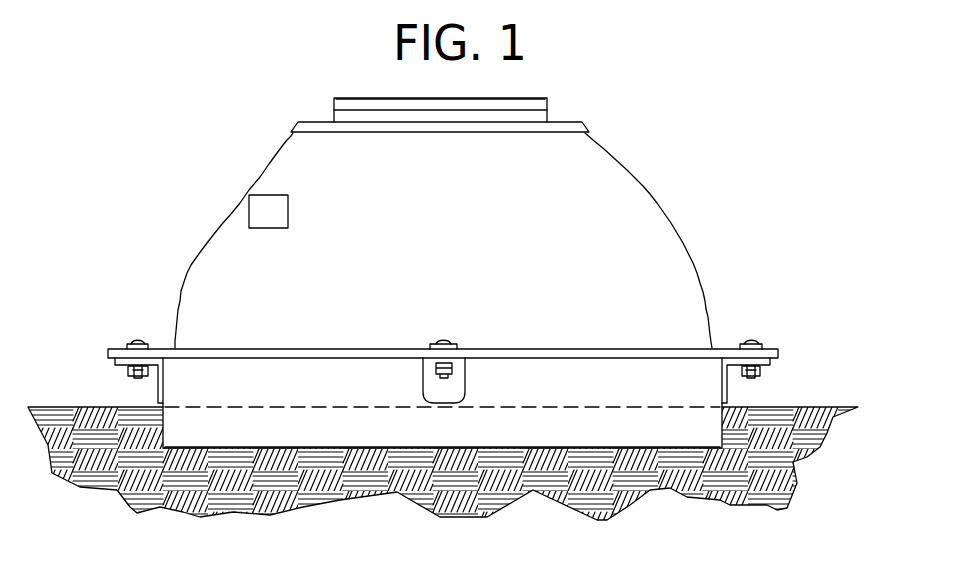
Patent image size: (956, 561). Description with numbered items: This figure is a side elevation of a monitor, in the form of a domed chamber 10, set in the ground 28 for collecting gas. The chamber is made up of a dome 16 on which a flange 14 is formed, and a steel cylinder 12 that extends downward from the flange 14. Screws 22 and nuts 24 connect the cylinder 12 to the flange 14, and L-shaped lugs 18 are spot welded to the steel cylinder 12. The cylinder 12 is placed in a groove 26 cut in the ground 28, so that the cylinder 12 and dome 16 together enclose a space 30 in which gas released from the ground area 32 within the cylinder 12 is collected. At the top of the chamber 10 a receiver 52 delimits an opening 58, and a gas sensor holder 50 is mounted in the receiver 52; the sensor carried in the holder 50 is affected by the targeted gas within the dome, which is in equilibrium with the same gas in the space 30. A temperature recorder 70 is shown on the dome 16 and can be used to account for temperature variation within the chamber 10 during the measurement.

The domed chamber 10 is at (668, 198).
The cylinder 12 is at (720, 415).
The flange 14 is at (160, 348).
The dome 16 is at (685, 245).
The L-shaped lugs 18 is at (157, 390).
The screws 22 is at (748, 338).
The nuts 24 is at (763, 368).
The groove 26 is at (720, 442).
The ground 28 is at (620, 518).
The space 30 is at (571, 378).
The ground area 32 is at (253, 407).
The gas sensor holder 50 is at (548, 99).
The receiver 52 is at (584, 126).
The opening 58 is at (368, 110).
The temperature recorder 70 is at (283, 215).